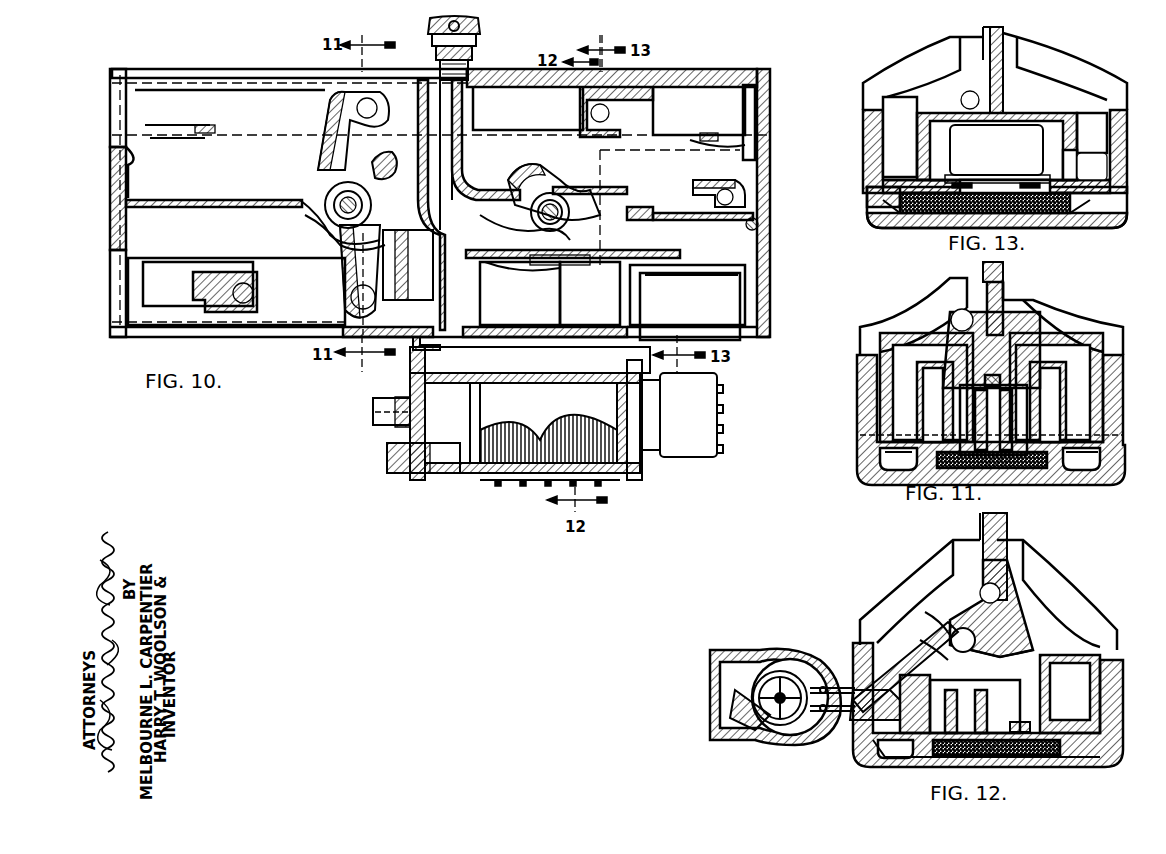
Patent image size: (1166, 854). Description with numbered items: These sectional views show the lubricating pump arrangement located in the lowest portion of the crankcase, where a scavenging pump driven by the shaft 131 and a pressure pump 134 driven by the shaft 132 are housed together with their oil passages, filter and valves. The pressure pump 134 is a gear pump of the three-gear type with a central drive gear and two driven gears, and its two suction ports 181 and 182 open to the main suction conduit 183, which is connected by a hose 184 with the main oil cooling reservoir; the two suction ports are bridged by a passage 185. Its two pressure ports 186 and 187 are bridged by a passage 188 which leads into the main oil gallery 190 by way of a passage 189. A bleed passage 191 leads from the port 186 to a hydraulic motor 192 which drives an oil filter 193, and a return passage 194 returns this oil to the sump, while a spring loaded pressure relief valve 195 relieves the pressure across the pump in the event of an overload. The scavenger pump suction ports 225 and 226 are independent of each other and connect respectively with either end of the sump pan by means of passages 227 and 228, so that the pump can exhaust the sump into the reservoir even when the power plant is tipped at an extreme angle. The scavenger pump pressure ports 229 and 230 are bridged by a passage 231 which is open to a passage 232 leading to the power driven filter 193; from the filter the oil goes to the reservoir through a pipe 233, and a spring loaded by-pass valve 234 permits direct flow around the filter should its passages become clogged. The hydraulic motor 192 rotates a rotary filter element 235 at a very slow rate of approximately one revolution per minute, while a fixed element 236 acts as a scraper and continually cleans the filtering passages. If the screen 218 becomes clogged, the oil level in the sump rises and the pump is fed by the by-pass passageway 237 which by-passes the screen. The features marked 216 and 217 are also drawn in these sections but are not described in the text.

In FIG. 10, the hose 184 is at (478, 33).
In FIG. 10, the passage 216 is at (190, 128).
In FIG. 10, the scavenger pump suction port 226 is at (375, 196).
In FIG. 11, the scavenger pump suction port 226 is at (1080, 430).
In FIG. 10, the scavenger pump pressure port 230 is at (395, 152).
In FIG. 10, the scavenger pump pressure port 229 is at (310, 238).
In FIG. 10, the by-pass passageway 237 is at (220, 283).
In FIG. 13, the by-pass passageway 237 is at (1095, 170).
In FIG. 10, the passage 217 is at (165, 275).
In FIG. 10, the scavenger pump suction port 225 is at (345, 292).
In FIG. 11, the scavenger pump suction port 225 is at (875, 448).
In FIG. 10, the passage 232 is at (415, 345).
In FIG. 10, the main suction conduit 183 is at (480, 155).
In FIG. 10, the pressure port 187 is at (535, 165).
In FIG. 12, the pressure port 187 is at (1000, 593).
In FIG. 10, the suction port 182 is at (575, 168).
In FIG. 12, the suction port 182 is at (1015, 645).
In FIG. 10, the suction port 181 is at (523, 238).
In FIG. 12, the suction port 181 is at (940, 615).
In FIG. 10, the pressure port 186 is at (537, 265).
In FIG. 12, the pressure port 186 is at (930, 640).
In FIG. 10, the passage 188 is at (668, 190).
In FIG. 10, the main oil gallery 190 is at (758, 224).
In FIG. 10, the pipe 233 is at (380, 422).
In FIG. 10, the by-pass valve 234 is at (450, 473).
In FIG. 10, the bleed passage 191 is at (565, 375).
In FIG. 12, the bleed passage 191 is at (855, 655).
In FIG. 10, the hydraulic motor 192 is at (700, 392).
In FIG. 12, the hydraulic motor 192 is at (765, 632).
In FIG. 10, the oil filter 193 is at (510, 483).
In FIG. 13, the shaft 132 is at (1003, 35).
In FIG. 12, the shaft 132 is at (1000, 525).
In FIG. 13, the passage 189 is at (961, 100).
In FIG. 13, the pressure pump 134 is at (1030, 155).
In FIG. 13, the screen 218 is at (940, 213).
In FIG. 12, the screen 218 is at (930, 762).
In FIG. 11, the shaft 131 is at (1003, 270).
In FIG. 11, the passage 231 is at (955, 318).
In FIG. 11, the passage 227 is at (890, 462).
In FIG. 11, the passage 228 is at (1085, 455).
In FIG. 12, the passage 185 is at (995, 630).
In FIG. 12, the return passage 194 is at (858, 720).
In FIG. 12, the rotary filter element 235 is at (790, 726).
In FIG. 12, the fixed element 236 is at (745, 725).
In FIG. 12, the pressure relief valve 195 is at (1030, 740).